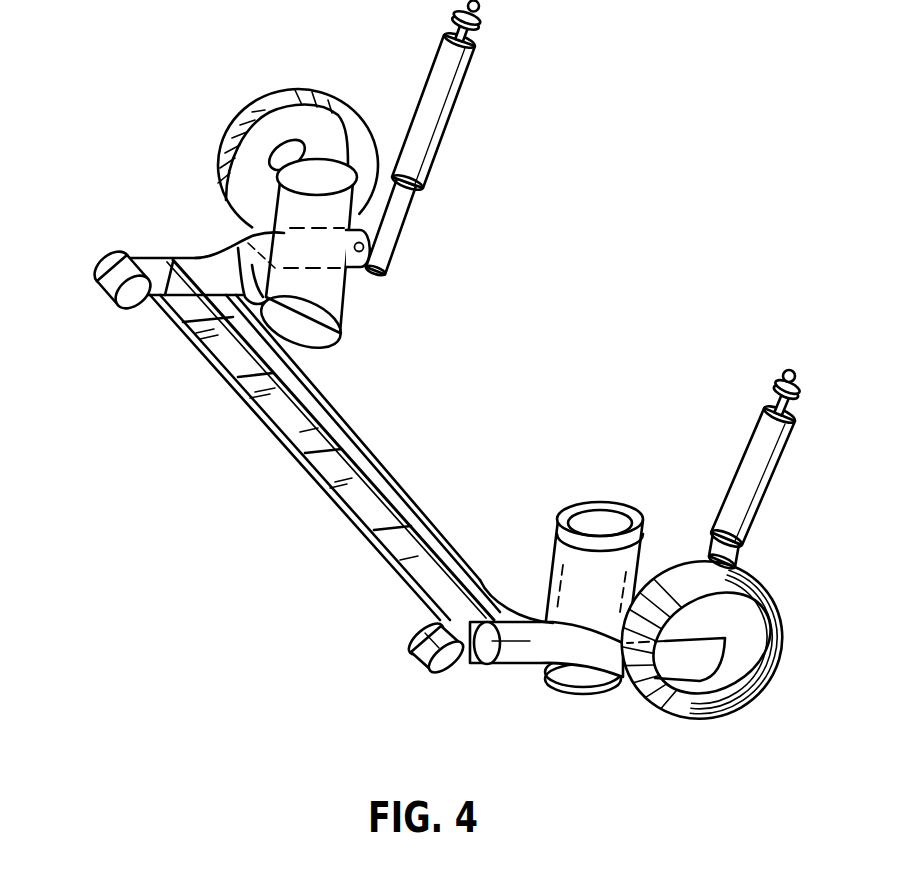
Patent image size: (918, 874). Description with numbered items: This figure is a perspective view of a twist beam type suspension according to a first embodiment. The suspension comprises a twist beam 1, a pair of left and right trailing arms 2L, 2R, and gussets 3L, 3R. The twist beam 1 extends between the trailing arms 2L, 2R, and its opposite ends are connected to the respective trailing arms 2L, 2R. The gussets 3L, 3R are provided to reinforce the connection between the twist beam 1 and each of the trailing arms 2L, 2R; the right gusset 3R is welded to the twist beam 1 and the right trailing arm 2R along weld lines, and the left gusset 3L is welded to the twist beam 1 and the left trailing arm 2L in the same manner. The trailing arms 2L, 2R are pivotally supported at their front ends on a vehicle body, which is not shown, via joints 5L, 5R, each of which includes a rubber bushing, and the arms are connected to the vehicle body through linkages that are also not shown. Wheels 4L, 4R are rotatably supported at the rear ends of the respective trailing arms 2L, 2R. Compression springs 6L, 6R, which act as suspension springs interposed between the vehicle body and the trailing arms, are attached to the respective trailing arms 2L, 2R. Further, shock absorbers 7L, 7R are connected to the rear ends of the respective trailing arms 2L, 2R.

The twist beam 1 is at (385, 472).
The right trailing arm 2R is at (183, 253).
The left trailing arm 2L is at (520, 665).
The right gusset 3R is at (222, 258).
The left gusset 3L is at (507, 603).
The right wheel 4R is at (240, 123).
The left wheel 4L is at (780, 590).
The right joint 5R is at (105, 263).
The left joint 5L is at (428, 666).
The right compression spring 6R is at (343, 301).
The left compression spring 6L is at (588, 503).
The right shock absorber 7R is at (468, 70).
The left shock absorber 7L is at (787, 448).